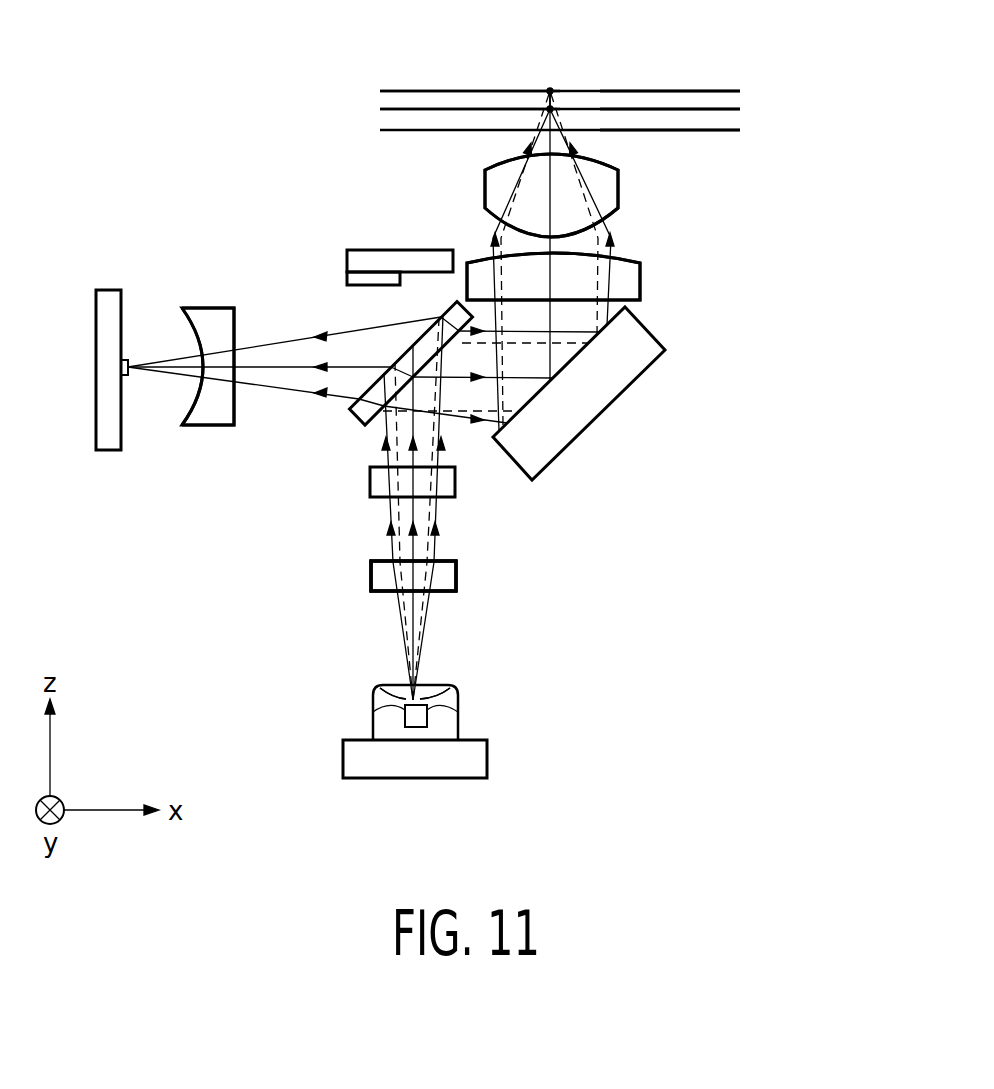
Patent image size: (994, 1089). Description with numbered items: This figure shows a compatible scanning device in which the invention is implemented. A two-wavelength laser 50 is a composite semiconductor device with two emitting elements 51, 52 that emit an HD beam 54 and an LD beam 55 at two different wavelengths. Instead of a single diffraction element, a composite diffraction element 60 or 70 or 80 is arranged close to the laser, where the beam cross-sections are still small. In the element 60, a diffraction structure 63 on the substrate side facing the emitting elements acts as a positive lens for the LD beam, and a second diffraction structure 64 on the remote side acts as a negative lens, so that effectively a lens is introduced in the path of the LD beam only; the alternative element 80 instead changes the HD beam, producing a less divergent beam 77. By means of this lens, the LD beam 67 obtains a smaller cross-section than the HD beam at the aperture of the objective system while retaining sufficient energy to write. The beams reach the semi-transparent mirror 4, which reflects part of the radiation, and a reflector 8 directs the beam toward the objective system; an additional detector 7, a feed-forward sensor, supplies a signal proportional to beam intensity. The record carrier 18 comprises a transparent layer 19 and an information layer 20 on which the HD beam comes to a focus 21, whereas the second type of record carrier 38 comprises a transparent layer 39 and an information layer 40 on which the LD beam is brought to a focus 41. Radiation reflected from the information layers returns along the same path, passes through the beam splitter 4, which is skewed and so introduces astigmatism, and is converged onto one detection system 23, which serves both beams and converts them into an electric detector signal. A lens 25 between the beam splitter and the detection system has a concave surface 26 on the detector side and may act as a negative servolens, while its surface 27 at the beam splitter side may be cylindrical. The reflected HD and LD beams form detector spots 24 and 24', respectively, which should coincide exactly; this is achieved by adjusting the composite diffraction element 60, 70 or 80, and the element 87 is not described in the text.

The semi-transparent mirror 4 is at (453, 315).
The additional detector 7 is at (383, 250).
The reflector 8 is at (618, 377).
The record carrier 18 is at (800, 78).
The transparent layer 19 is at (710, 116).
The information layer 20 is at (713, 107).
The focus 21 is at (556, 108).
The detection system 23 is at (112, 452).
The detector spot 24 is at (139, 340).
The detector spot 24' is at (141, 326).
The lens 25 is at (213, 410).
The concave lens surface 26 is at (192, 408).
The surface 27 is at (235, 326).
The record carrier 38 is at (325, 62).
The transparent layer 39 is at (416, 103).
The information layer 40 is at (412, 90).
The focus 41 is at (550, 90).
The two-wavelength laser 50 is at (502, 694).
The emitting element 51 is at (458, 712).
The emitting element 52 is at (373, 712).
The HD beam 54 is at (441, 690).
The LD beam 55 is at (388, 690).
The composite diffraction element 60 is at (458, 576).
The diffraction structure 63 is at (444, 592).
The second diffraction structure 64 is at (444, 560).
The LD beam 67 is at (600, 240).
The composite diffraction element 70 is at (413, 576).
The less divergent beam 77 is at (551, 195).
The diffraction element 80 is at (413, 576).
The objective lens 87 is at (553, 276).